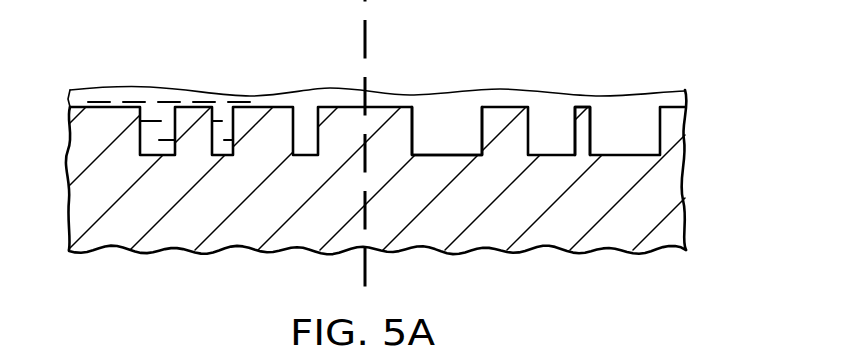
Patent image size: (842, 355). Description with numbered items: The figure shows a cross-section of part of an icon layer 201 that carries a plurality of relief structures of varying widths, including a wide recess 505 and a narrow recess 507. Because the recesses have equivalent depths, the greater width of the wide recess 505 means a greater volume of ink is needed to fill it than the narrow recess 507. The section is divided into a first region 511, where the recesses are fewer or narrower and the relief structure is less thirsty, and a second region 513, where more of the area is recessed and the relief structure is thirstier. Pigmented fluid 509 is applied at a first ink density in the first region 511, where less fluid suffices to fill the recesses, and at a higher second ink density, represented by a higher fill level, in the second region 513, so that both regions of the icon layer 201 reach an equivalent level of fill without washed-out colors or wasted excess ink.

The icon layer 201 is at (690, 170).
The wide recess 505 is at (436, 107).
The narrow recess 507 is at (157, 102).
The pigmented fluid 509 is at (576, 107).
The first region 511 is at (245, 30).
The second region 513 is at (530, 30).